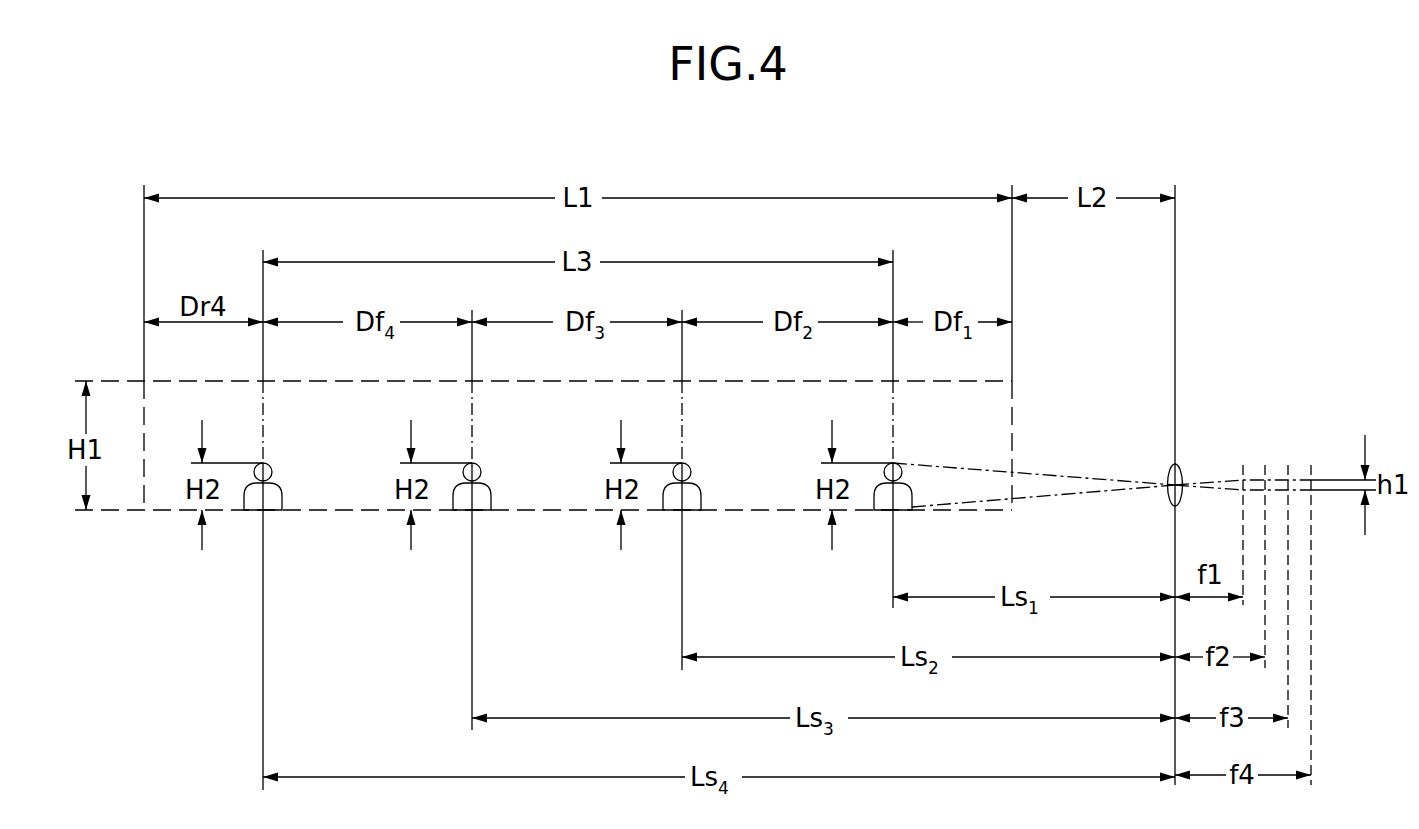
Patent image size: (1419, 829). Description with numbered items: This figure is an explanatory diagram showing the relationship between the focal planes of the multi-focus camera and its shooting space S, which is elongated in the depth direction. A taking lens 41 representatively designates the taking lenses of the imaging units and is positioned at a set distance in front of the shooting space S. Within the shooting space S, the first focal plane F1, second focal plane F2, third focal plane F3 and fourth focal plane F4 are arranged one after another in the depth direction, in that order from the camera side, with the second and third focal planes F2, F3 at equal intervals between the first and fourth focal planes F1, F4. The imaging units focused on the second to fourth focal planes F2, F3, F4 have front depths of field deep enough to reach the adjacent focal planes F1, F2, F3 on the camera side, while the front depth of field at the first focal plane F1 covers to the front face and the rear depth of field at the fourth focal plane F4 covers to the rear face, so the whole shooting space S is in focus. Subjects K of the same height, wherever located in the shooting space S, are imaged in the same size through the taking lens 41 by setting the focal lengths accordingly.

The taking lens 41 is at (1182, 470).
The first focal plane F1 is at (894, 420).
The second focal plane F2 is at (714, 490).
The third focal plane F3 is at (473, 433).
The fourth focal plane F4 is at (264, 433).
The subject K is at (702, 488).
The shooting space S is at (523, 513).